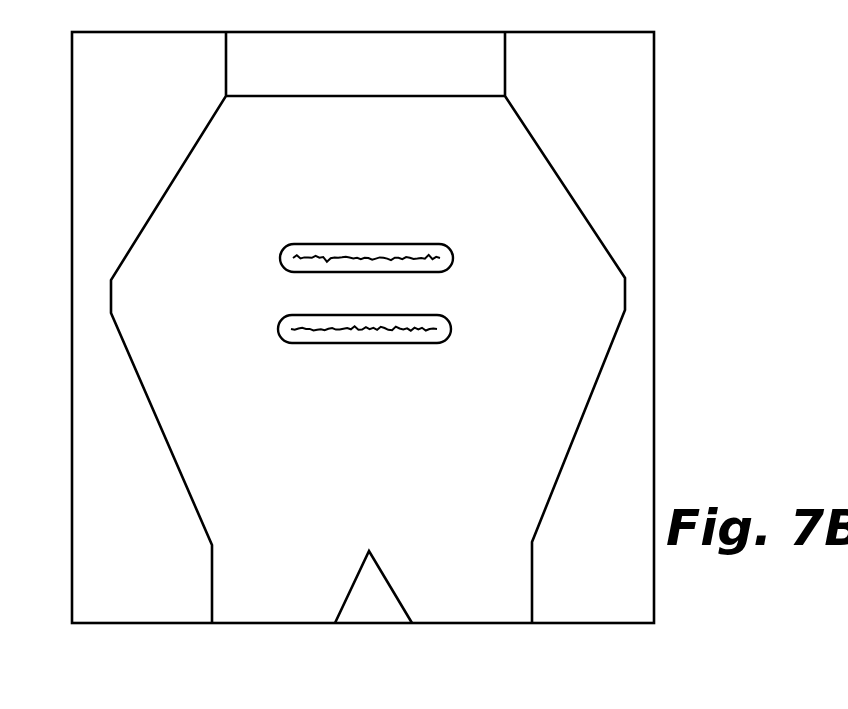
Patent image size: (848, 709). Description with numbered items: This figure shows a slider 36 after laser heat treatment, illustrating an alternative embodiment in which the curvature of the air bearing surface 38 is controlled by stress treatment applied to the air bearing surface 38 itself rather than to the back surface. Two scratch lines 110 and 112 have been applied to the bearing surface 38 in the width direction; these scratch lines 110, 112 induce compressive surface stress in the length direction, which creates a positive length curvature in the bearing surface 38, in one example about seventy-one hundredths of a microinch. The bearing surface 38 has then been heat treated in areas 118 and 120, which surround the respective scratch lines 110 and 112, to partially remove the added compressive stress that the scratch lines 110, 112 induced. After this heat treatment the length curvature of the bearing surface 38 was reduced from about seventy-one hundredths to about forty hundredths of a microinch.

The slider 36 is at (678, 159).
The air bearing surface 38 is at (108, 138).
The scratch line 110 is at (417, 258).
The scratch line 112 is at (413, 329).
The heat treated area 118 is at (300, 244).
The heat treated area 120 is at (300, 315).